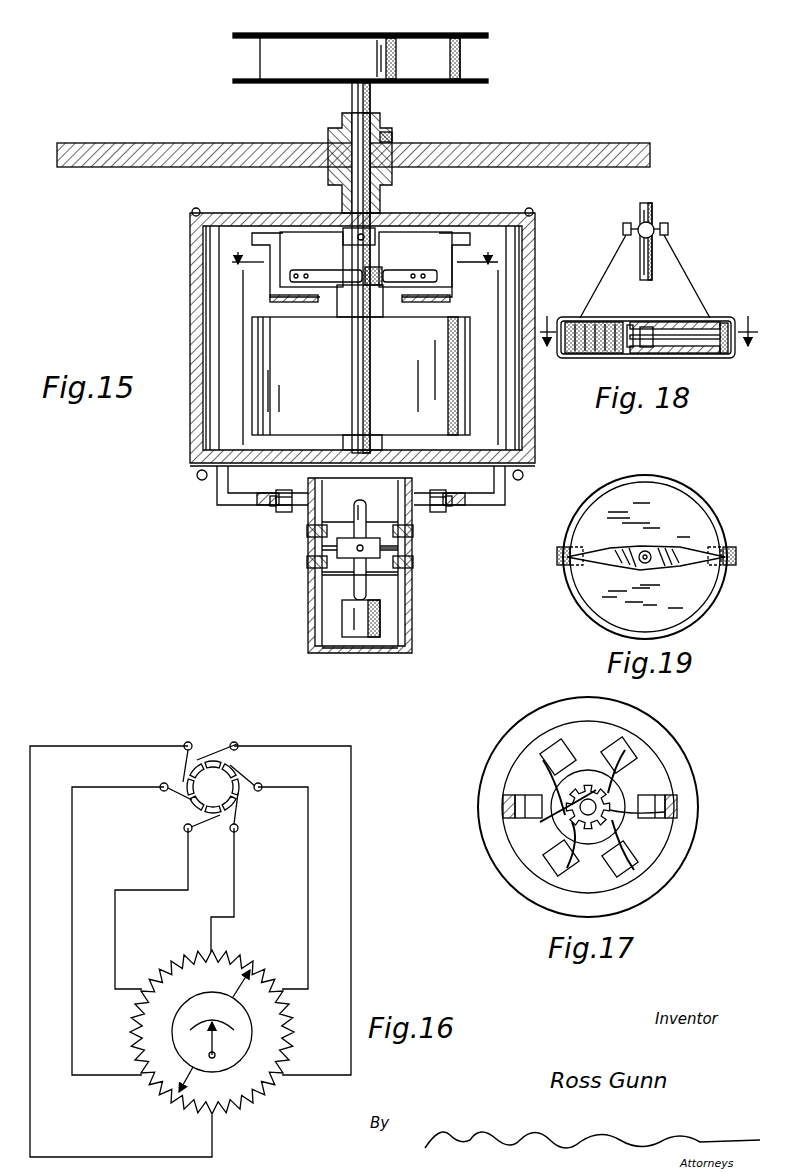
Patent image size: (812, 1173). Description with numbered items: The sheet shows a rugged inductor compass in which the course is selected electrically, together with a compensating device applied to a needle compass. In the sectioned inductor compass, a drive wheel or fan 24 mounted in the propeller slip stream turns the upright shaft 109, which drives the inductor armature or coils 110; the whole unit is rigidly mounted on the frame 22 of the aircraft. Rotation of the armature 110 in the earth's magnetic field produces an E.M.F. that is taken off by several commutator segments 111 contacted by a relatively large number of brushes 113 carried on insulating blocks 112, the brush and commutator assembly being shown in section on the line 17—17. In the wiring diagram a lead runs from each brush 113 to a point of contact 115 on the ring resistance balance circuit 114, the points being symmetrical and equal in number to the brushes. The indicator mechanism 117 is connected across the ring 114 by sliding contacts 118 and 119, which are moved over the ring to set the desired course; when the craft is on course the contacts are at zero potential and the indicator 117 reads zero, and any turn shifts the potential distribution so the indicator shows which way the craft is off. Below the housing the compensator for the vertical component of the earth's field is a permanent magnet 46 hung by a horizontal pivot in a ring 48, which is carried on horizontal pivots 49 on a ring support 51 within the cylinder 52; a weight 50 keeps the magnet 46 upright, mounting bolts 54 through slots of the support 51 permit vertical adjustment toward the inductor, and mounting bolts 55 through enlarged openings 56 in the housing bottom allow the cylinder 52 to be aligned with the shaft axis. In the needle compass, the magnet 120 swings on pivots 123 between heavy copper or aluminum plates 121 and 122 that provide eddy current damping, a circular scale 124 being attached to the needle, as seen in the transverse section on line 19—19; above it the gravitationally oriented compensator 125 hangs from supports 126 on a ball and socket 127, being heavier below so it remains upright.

In FIG. 15, the section line 17— 17 is at (362, 248).
In FIG. 18, the section line 19— 19 is at (649, 321).
In FIG. 15, the frame of the air craft 22 is at (455, 143).
In FIG. 15, the propeller or fan 24 is at (468, 33).
In FIG. 15, the permanent magnet 46 is at (356, 512).
In FIG. 15, the ring 48 is at (371, 540).
In FIG. 15, the horizontal pivots 49 is at (392, 556).
In FIG. 15, the weight 50 is at (363, 637).
In FIG. 15, the ring support 51 is at (333, 572).
In FIG. 15, the cylinder 52 is at (412, 598).
In FIG. 15, the mounting bolts 54 is at (306, 535).
In FIG. 15, the mounting bolts 55 is at (282, 513).
In FIG. 15, the enlarged openings or slots 56 is at (266, 505).
In FIG. 15, the upright shaft 109 is at (372, 100).
In FIG. 15, the inductor armature or coils 110 is at (361, 376).
In FIG. 15, the commutator segments 111 is at (382, 268).
In FIG. 17, the commutator segments 111 is at (572, 815).
In FIG. 16, the commutator segments 111 is at (240, 777).
In FIG. 17, the insulating blocks 112 is at (556, 750).
In FIG. 15, the brushes 113 is at (326, 270).
In FIG. 17, the brushes 113 is at (586, 790).
In FIG. 16, the brushes 113 is at (215, 757).
In FIG. 16, the ring resistance balance circuit 114 is at (263, 1093).
In FIG. 16, the points of contact 115 is at (213, 952).
In FIG. 16, the indicator mechanism 117 is at (222, 1058).
In FIG. 16, the sliding contact 118 is at (250, 970).
In FIG. 16, the sliding contact 119 is at (186, 1105).
In FIG. 18, the magnet of the fixed needle type compass 120 is at (670, 334).
In FIG. 19, the magnet of the fixed needle type compass 120 is at (660, 550).
In FIG. 18, the copper or aluminum plate 121 is at (652, 320).
In FIG. 18, the copper or aluminum plate 122 is at (668, 357).
In FIG. 19, the copper or aluminum plate 122 is at (592, 600).
In FIG. 18, the pivots 123 is at (646, 337).
In FIG. 19, the pivots 123 is at (640, 553).
In FIG. 18, the circular scale 124 is at (595, 345).
In FIG. 19, the circular scale 124 is at (668, 482).
In FIG. 18, the gravitationally oriented compensator 125 is at (652, 262).
In FIG. 18, the supports 126 is at (668, 230).
In FIG. 18, the ball and socket 127 is at (650, 225).